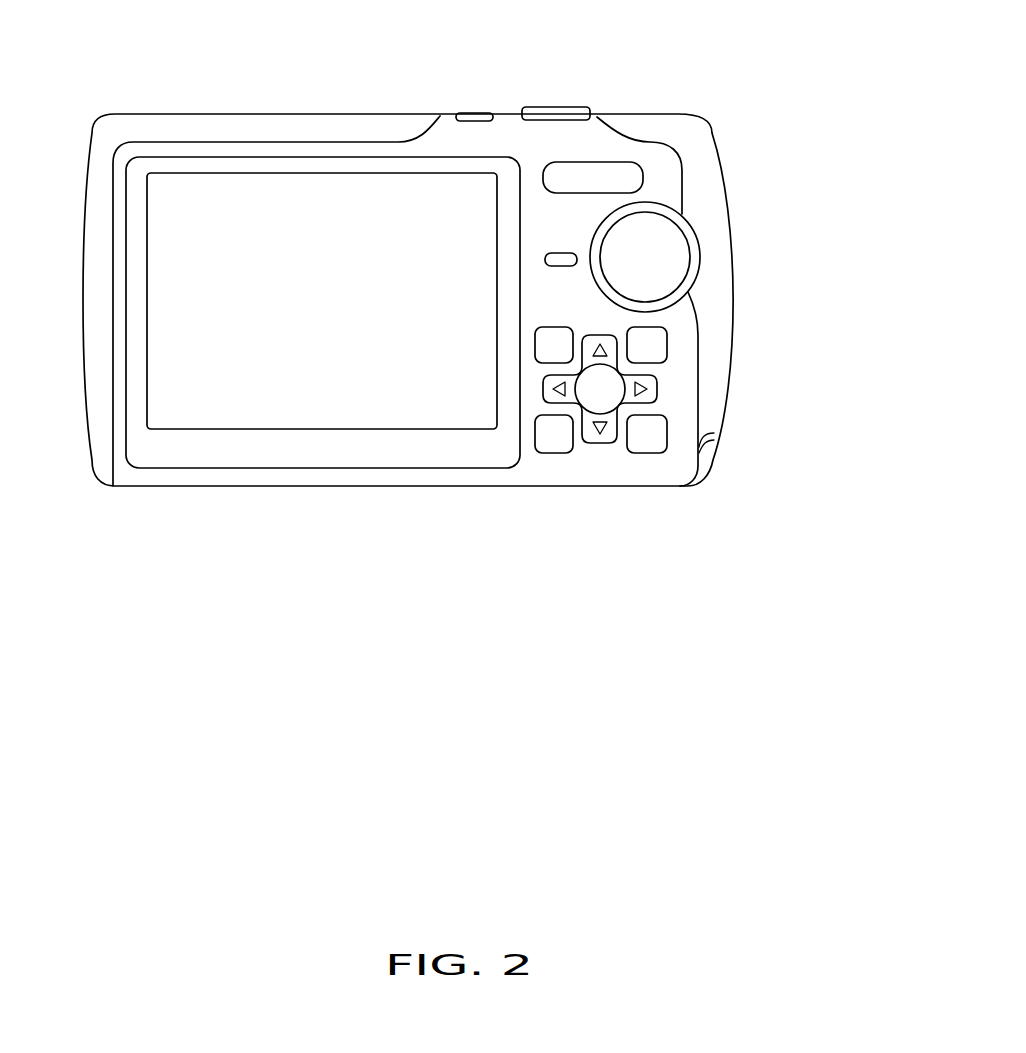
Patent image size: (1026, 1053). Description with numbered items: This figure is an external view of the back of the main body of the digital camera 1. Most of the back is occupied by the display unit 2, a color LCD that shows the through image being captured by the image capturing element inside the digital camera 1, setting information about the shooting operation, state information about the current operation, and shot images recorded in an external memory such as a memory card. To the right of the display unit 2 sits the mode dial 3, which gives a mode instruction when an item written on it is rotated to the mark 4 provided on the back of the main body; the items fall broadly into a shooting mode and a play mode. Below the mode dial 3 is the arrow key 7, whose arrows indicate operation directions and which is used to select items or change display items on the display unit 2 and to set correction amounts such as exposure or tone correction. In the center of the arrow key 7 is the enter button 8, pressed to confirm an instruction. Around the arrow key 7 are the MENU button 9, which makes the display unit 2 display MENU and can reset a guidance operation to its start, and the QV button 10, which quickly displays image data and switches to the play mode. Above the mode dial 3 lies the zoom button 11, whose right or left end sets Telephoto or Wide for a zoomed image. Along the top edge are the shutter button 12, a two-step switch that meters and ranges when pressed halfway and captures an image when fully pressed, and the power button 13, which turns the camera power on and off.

The digital camera 1 is at (147, 113).
The display unit 2 is at (293, 193).
The mode dial 3 is at (677, 253).
The mark 4 is at (563, 253).
The arrow key 7 is at (657, 388).
The enter button 8 is at (607, 397).
The MENU button 9 is at (562, 335).
The QV button 10 is at (650, 447).
The zoom button 11 is at (637, 177).
The shutter button 12 is at (577, 70).
The power button 13 is at (475, 113).